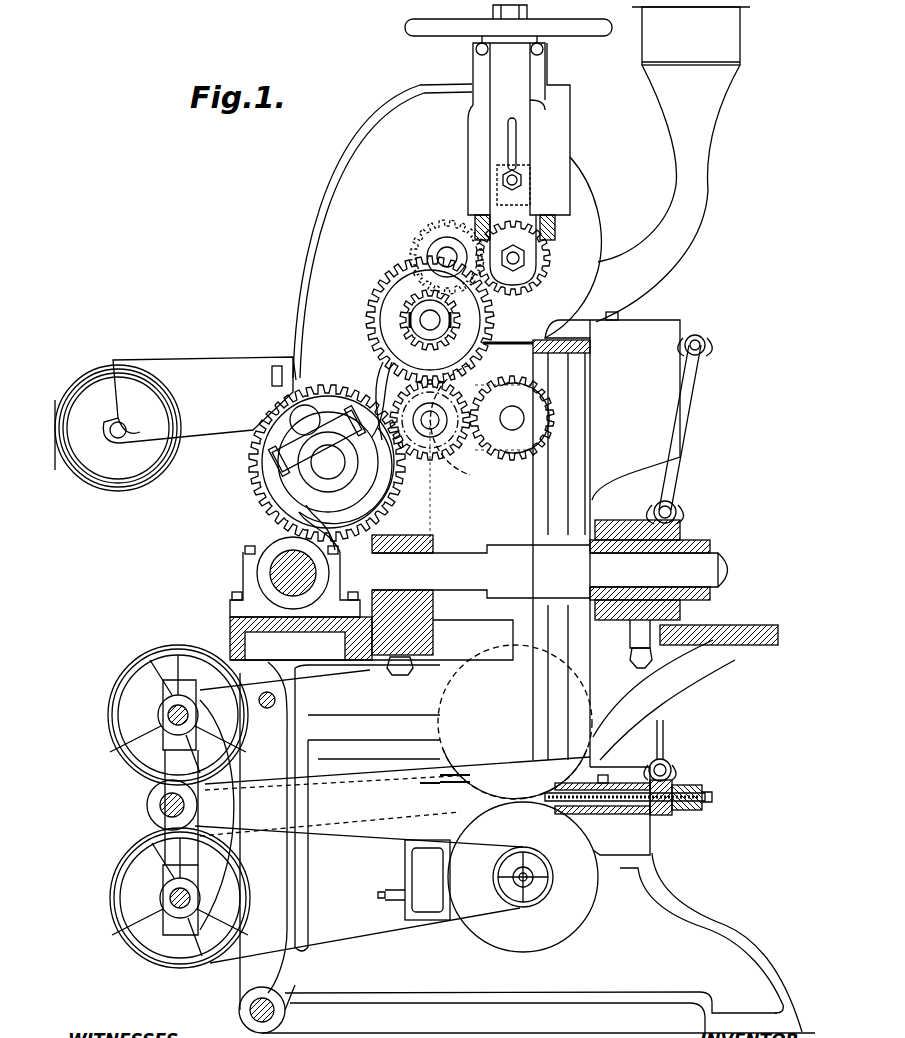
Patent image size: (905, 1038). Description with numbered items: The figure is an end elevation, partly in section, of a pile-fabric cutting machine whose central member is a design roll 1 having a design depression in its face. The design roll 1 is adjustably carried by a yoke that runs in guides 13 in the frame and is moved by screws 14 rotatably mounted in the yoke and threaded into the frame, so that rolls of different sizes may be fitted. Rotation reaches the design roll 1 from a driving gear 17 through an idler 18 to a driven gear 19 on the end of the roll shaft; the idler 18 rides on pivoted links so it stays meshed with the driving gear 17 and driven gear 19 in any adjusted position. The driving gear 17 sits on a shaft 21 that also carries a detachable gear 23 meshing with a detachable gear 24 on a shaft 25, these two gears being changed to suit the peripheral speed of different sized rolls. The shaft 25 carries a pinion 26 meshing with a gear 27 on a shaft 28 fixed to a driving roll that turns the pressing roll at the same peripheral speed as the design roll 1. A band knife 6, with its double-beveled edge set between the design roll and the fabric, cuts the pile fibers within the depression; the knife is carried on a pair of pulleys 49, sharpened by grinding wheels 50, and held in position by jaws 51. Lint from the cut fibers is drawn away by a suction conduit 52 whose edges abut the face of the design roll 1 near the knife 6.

The design roll 1 is at (435, 558).
The band knife 6 is at (583, 337).
The guides 13 is at (540, 135).
The screws 14 is at (497, 5).
The driving gear 17 is at (408, 320).
The idler 18 is at (441, 226).
The driven gear 19 is at (544, 290).
The shaft 21 is at (420, 320).
The detachable gear 23 is at (381, 283).
The detachable gear 24 is at (428, 446).
The shaft 25 is at (438, 455).
The pinion 26 is at (400, 452).
The gear 27 is at (511, 458).
The shaft 28 is at (504, 440).
The pulleys 49 is at (583, 387).
The grinding wheels 50 is at (482, 781).
The jaws 51 is at (613, 775).
The suction conduit 52 is at (698, 212).